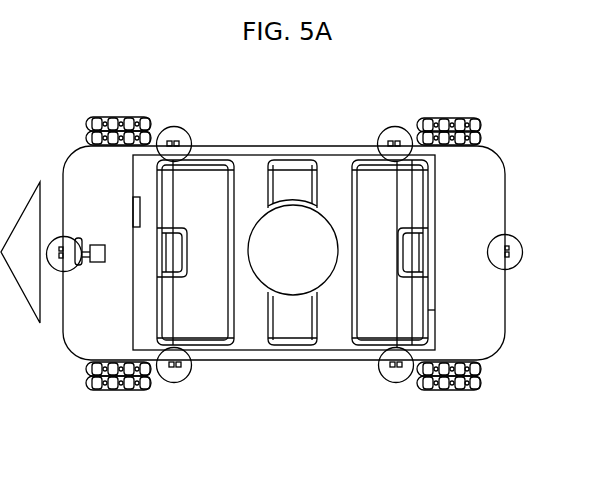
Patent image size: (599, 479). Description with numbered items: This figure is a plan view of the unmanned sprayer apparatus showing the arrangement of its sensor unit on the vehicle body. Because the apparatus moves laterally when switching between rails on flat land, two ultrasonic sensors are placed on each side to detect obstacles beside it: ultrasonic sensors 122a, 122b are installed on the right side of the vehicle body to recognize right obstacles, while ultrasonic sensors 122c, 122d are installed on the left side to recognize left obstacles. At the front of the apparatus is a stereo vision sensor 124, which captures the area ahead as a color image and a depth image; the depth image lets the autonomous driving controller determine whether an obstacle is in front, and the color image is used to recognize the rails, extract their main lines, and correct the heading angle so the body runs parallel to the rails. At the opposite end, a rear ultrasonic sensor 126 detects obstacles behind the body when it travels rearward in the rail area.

The ultrasonic sensor 122a is at (178, 127).
The ultrasonic sensor 122b is at (396, 127).
The ultrasonic sensor 122c is at (175, 383).
The ultrasonic sensor 122d is at (396, 383).
The stereo vision sensor 124 is at (63, 236).
The rear ultrasonic sensor 126 is at (508, 236).